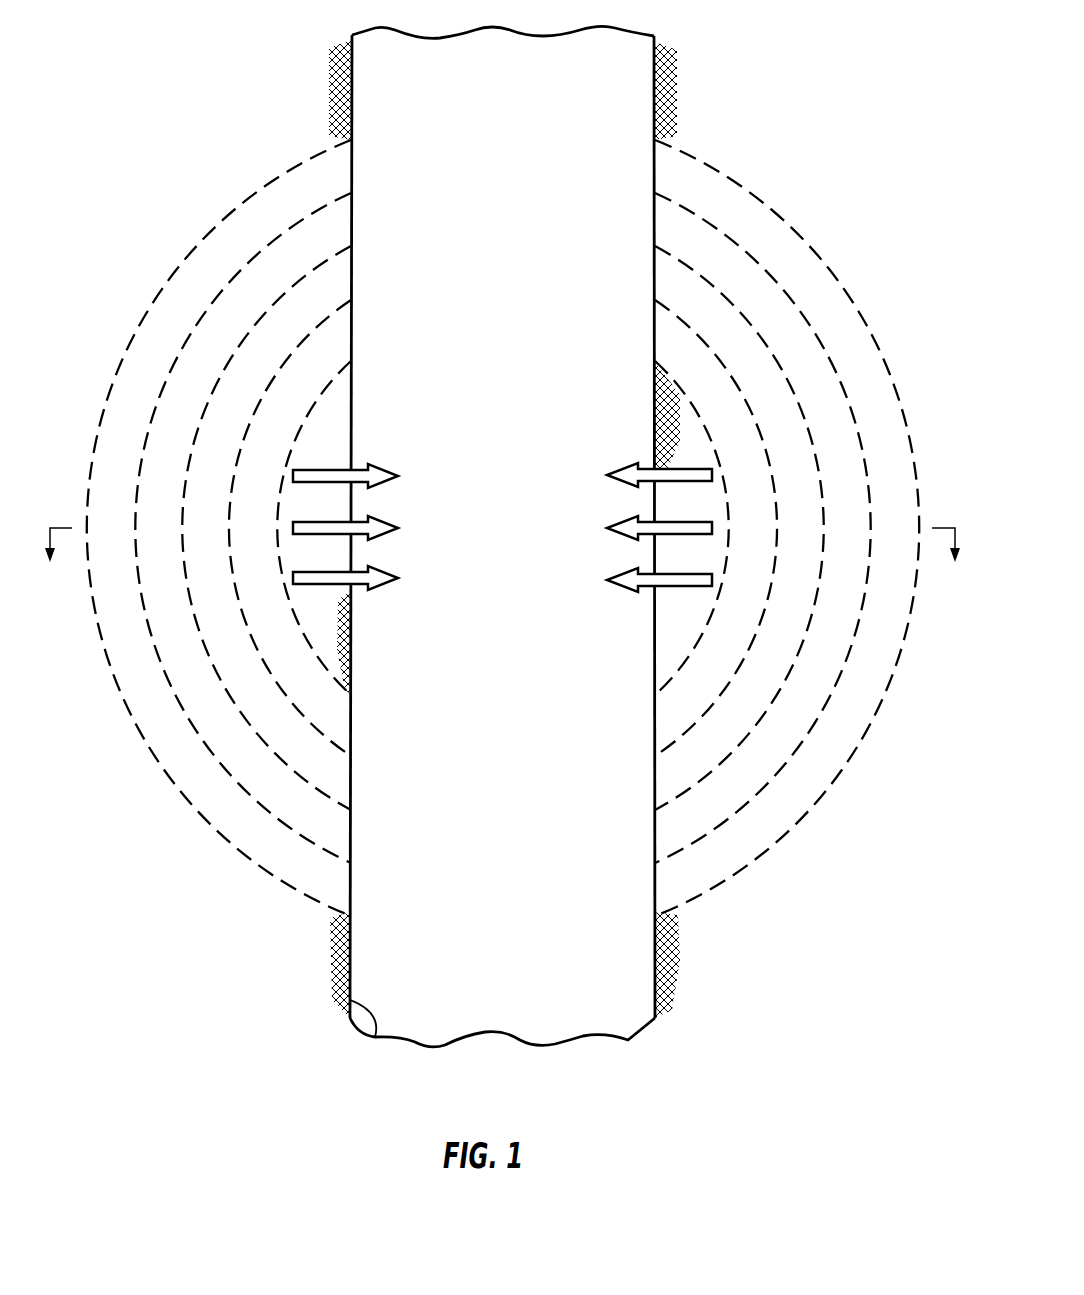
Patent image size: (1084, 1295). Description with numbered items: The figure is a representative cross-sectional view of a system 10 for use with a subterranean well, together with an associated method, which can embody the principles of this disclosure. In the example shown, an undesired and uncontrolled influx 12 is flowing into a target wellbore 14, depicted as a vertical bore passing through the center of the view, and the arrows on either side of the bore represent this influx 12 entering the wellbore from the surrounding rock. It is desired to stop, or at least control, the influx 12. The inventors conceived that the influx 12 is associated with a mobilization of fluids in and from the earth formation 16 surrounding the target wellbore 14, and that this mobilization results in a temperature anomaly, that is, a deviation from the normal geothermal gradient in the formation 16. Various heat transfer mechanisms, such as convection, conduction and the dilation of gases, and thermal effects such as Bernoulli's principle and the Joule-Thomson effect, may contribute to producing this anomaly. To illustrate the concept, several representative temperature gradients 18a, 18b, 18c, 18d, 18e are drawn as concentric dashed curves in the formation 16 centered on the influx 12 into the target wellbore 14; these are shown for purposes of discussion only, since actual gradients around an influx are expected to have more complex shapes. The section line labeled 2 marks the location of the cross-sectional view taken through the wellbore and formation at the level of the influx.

The system 10 is at (867, 93).
The influx 12 is at (330, 468).
The target wellbore 14 is at (378, 1040).
The earth formation 16 is at (762, 893).
The temperature gradient 18a is at (667, 682).
The temperature gradient 18b is at (680, 742).
The temperature gradient 18c is at (676, 797).
The temperature gradient 18d is at (676, 853).
The temperature gradient 18e is at (773, 850).
The section line 2- 2 is at (501, 561).